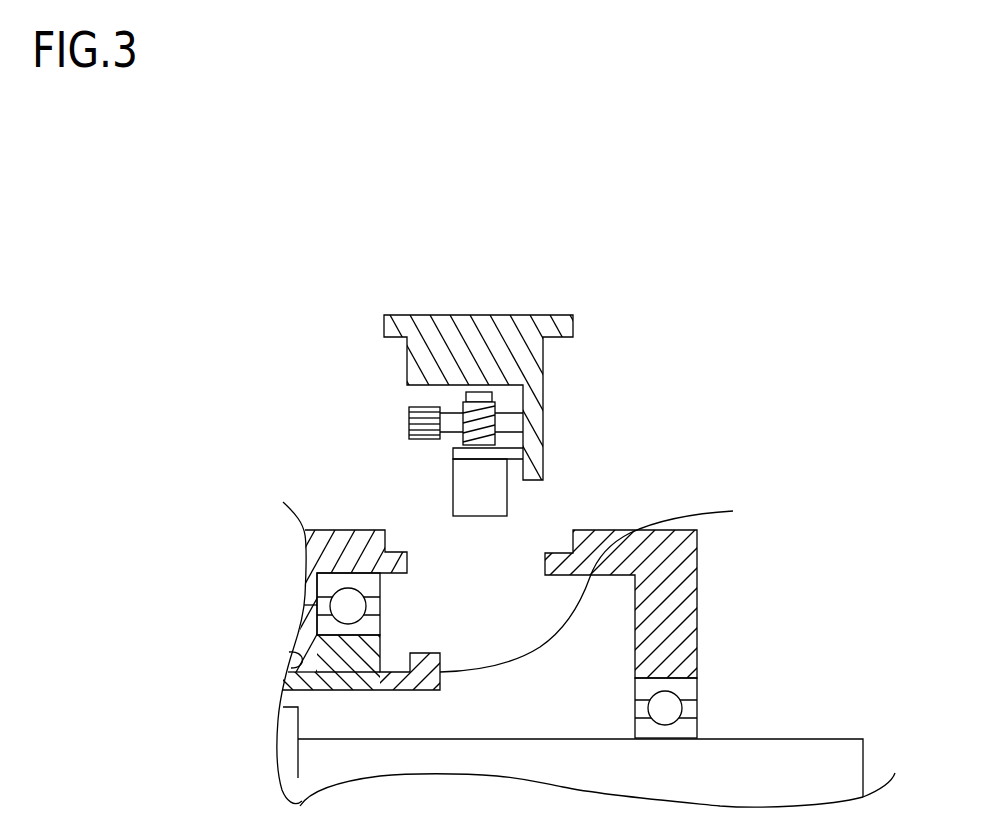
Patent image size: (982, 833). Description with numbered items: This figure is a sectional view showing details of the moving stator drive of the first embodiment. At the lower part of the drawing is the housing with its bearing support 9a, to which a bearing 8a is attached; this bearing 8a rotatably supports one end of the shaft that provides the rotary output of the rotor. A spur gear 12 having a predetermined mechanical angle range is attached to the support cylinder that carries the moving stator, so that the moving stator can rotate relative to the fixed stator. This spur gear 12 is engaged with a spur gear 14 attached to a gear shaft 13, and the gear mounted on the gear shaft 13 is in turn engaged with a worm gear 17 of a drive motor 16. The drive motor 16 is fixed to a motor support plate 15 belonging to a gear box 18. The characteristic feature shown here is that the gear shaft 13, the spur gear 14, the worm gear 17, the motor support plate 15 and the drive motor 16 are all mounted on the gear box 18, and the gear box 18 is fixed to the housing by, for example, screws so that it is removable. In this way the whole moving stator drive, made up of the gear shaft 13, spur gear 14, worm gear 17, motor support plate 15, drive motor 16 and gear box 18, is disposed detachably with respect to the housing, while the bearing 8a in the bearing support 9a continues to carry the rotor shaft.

The bearing 8a is at (682, 698).
The bearing support 9a is at (687, 582).
The spur gear 12 is at (605, 584).
The gear shaft 13 is at (514, 423).
The spur gear 14 is at (407, 423).
The motor support plate 15 is at (512, 451).
The drive motor 16 is at (450, 496).
The worm gear 17 is at (472, 415).
The gear box 18 is at (460, 338).